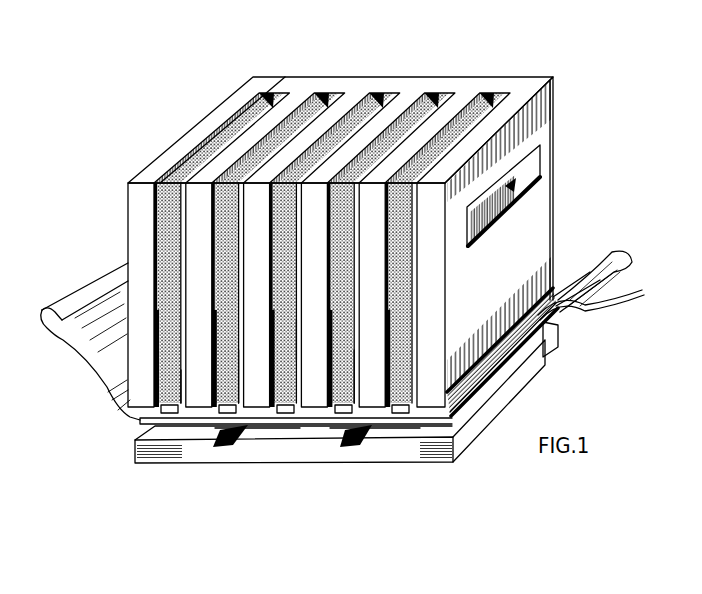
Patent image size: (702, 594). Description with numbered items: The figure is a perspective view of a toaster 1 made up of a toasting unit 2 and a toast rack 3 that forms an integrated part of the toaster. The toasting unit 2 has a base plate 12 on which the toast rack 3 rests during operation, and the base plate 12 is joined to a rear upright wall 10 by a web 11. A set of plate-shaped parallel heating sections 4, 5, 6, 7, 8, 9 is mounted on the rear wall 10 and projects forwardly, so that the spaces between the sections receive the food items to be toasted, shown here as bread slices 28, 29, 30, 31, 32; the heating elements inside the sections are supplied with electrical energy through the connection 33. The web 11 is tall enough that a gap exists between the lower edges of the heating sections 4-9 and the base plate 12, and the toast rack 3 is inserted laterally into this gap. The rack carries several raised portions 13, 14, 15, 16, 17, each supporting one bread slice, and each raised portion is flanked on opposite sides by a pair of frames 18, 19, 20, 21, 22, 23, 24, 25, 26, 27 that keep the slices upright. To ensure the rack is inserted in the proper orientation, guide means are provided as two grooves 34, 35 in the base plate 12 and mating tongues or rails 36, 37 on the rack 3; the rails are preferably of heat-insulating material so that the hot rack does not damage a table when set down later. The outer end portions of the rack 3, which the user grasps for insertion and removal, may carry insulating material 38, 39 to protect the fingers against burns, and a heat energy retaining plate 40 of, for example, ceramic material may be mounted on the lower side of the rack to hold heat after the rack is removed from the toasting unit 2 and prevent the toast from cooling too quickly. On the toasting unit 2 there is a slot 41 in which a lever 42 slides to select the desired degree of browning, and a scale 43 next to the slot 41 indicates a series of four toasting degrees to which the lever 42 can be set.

The toaster 1 is at (524, 60).
The toasting unit 2 is at (557, 113).
The toast rack 3 is at (567, 264).
The heating section 4 is at (502, 108).
The heating section 5 is at (442, 108).
The heating section 6 is at (385, 110).
The heating section 7 is at (322, 105).
The heating section 8 is at (272, 103).
The heating section 9 is at (208, 122).
The rear upright wall 10 is at (402, 78).
The web 11 is at (549, 345).
The base plate 12 is at (305, 457).
The raised portion 13 is at (404, 412).
The raised portion 14 is at (343, 412).
The raised portion 15 is at (284, 412).
The raised portion 16 is at (228, 418).
The raised portion 17 is at (177, 412).
The frame 18 is at (414, 393).
The frame 19 is at (395, 393).
The frame 20 is at (357, 365).
The frame 21 is at (328, 367).
The frame 22 is at (302, 330).
The frame 23 is at (272, 330).
The frame 24 is at (242, 368).
The frame 25 is at (212, 370).
The frame 26 is at (180, 393).
The frame 27 is at (157, 393).
The bread slice 28 is at (407, 283).
The bread slice 29 is at (347, 282).
The bread slice 30 is at (290, 287).
The bread slice 31 is at (230, 287).
The bread slice 32 is at (176, 289).
The connection 33 is at (580, 324).
The groove 34 is at (358, 437).
The groove 35 is at (226, 447).
The rail 36 is at (357, 447).
The rail 37 is at (247, 433).
The insulating material 38 is at (612, 257).
The insulating material 39 is at (80, 293).
The heat energy retaining plate 40 is at (167, 424).
The slot 41 is at (519, 188).
The lever 42 is at (513, 206).
The scale 43 is at (514, 178).